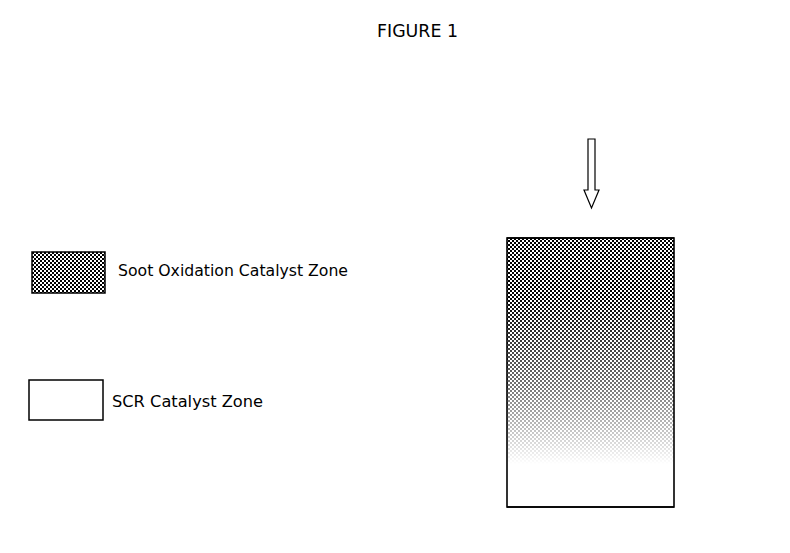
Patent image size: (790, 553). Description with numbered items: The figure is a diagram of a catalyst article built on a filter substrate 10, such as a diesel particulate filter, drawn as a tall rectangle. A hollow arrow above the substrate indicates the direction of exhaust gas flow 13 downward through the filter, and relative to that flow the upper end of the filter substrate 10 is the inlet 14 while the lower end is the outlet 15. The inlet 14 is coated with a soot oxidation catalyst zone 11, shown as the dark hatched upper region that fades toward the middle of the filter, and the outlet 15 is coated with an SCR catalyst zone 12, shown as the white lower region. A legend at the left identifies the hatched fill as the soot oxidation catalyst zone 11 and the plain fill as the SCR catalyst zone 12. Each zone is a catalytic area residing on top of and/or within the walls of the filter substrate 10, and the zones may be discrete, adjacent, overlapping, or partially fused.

The filter substrate 10 is at (635, 367).
The soot oxidation catalyst zone 11 is at (608, 263).
The SCR catalyst zone 12 is at (623, 477).
The direction of exhaust gas flow 13 is at (591, 163).
The inlet 14 is at (578, 257).
The outlet 15 is at (573, 484).